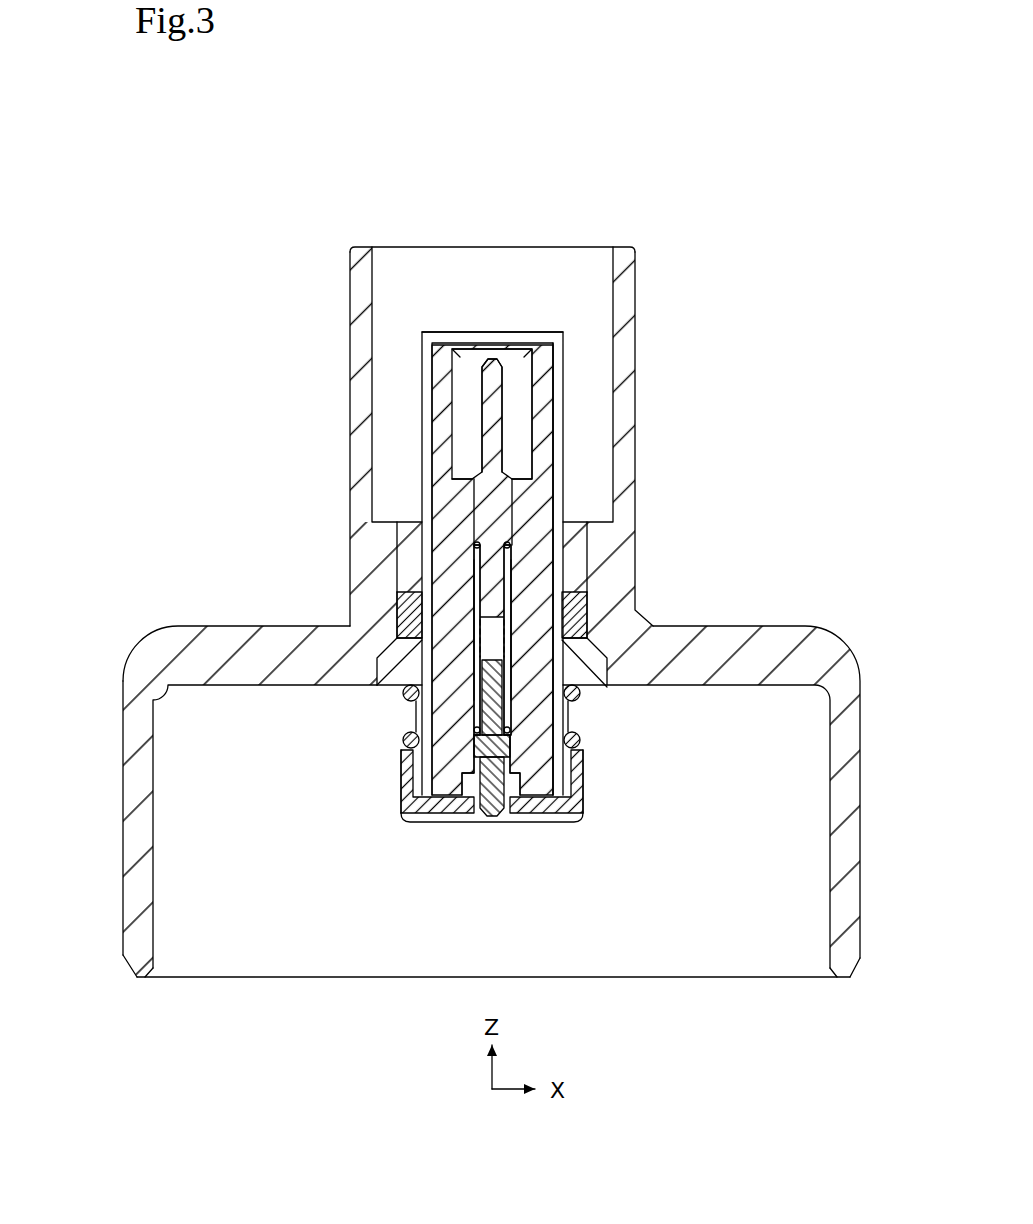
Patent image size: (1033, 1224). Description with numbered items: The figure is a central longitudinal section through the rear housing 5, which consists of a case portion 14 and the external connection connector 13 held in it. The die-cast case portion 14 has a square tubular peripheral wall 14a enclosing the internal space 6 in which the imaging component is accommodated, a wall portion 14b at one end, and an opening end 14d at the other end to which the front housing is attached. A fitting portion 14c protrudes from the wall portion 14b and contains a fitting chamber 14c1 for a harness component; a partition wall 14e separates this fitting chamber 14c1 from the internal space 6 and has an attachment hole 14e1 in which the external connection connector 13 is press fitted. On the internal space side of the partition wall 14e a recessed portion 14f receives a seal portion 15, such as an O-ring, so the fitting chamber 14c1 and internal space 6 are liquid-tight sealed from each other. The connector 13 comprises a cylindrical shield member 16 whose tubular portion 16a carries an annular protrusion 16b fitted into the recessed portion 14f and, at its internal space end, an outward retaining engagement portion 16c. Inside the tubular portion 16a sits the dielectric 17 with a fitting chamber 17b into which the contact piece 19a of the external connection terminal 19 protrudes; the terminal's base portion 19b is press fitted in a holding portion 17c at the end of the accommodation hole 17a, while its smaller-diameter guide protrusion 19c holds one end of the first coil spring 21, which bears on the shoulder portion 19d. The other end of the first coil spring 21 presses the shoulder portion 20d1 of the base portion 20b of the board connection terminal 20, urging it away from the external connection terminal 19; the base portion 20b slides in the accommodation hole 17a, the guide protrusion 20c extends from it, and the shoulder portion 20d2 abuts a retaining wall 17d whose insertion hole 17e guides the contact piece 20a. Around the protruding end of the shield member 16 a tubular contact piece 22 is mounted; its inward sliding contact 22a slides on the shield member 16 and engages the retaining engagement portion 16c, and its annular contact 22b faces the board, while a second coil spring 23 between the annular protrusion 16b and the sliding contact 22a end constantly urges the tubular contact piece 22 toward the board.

The rear housing 5 is at (687, 218).
The internal space 6 is at (202, 715).
The external connection connector 13 is at (408, 405).
The case portion 14 is at (123, 905).
The tubular peripheral wall 14a is at (123, 790).
The wall portion 14b is at (205, 627).
The fitting portion 14c is at (350, 287).
The fitting chamber 14c1 is at (567, 263).
The opening end 14d is at (135, 980).
The partition wall 14e is at (392, 517).
The attachment hole 14e1 is at (587, 578).
The recessed portion 14f is at (400, 700).
The seal portion 15 is at (587, 617).
The shield member 16 is at (563, 353).
The tubular portion 16a is at (563, 442).
The annular protrusion 16b is at (607, 665).
The retaining engagement portion 16c is at (397, 770).
The dielectric 17 is at (427, 390).
The accommodation hole 17a is at (493, 637).
The fitting chamber 17b is at (525, 375).
The holding portion 17c is at (473, 482).
The retaining wall 17d is at (477, 778).
The insertion hole 17e is at (503, 800).
The external connection terminal 19 is at (503, 394).
The contact piece 19a is at (503, 422).
The base portion 19b is at (563, 510).
The guide protrusion 19c is at (480, 579).
The shoulder portion 19d is at (478, 548).
The board connection terminal 20 is at (560, 717).
The contact piece 20a is at (498, 805).
The base portion 20b is at (560, 747).
The guide protrusion 20c is at (567, 700).
The shoulder portion 20d1 is at (403, 706).
The shoulder portion 20d2 is at (567, 767).
The first coil spring 21 is at (580, 592).
The tubular contact piece 22 is at (400, 803).
The sliding contact 22a is at (407, 818).
The annular contact 22b is at (577, 820).
The second coil spring 23 is at (403, 700).